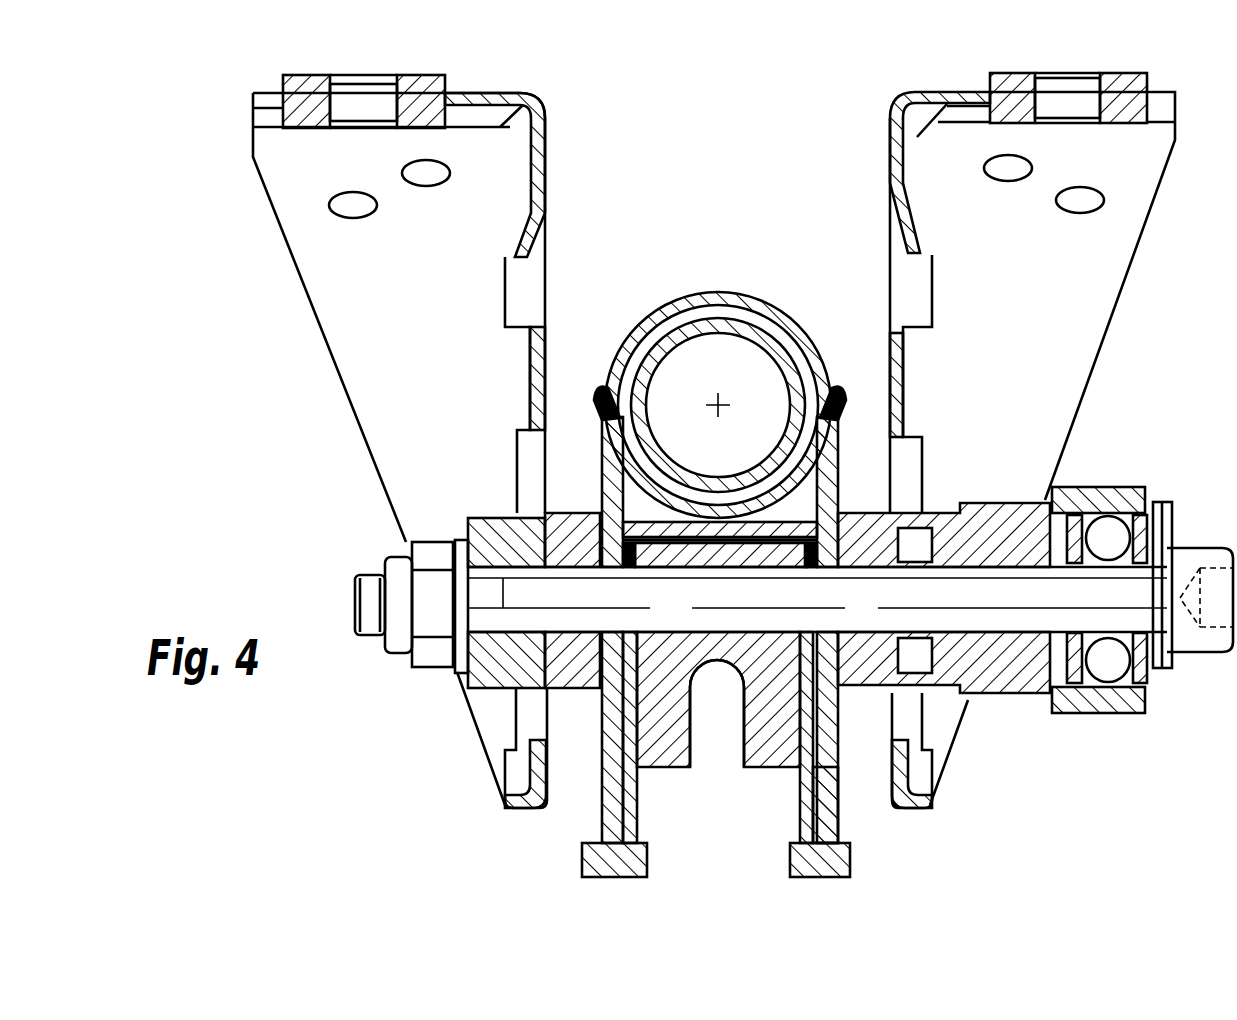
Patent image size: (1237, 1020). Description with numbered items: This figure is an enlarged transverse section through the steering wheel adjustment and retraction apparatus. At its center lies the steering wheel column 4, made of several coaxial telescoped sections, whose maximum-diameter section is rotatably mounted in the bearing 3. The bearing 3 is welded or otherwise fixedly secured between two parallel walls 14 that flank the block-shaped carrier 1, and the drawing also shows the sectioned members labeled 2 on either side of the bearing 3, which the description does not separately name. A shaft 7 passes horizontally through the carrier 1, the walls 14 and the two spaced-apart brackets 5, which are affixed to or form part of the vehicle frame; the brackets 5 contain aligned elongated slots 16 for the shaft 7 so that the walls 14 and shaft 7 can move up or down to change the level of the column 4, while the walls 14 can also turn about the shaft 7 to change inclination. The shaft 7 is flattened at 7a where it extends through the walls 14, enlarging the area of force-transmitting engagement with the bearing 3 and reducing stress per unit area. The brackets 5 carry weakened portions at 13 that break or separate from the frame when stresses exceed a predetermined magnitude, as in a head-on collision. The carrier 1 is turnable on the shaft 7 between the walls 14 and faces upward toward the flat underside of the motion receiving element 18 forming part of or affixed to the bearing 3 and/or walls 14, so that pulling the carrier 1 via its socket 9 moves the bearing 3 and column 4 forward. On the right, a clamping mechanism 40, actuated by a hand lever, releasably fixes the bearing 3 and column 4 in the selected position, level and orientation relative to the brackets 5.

The carrier 1 is at (768, 727).
The clamp arms 2 is at (628, 522).
The bearing 3 is at (652, 320).
The steering wheel column 4 is at (731, 326).
The brackets 5 is at (358, 345).
The shaft 7 is at (978, 600).
The flattened portion of the shaft 7a is at (628, 632).
The socket 9 is at (703, 700).
The weakened portions 13 is at (405, 78).
The walls 14 is at (828, 793).
The elongated slots 16 is at (527, 470).
The motion receiving element 18 is at (737, 530).
The clamping mechanism 40 is at (1166, 489).